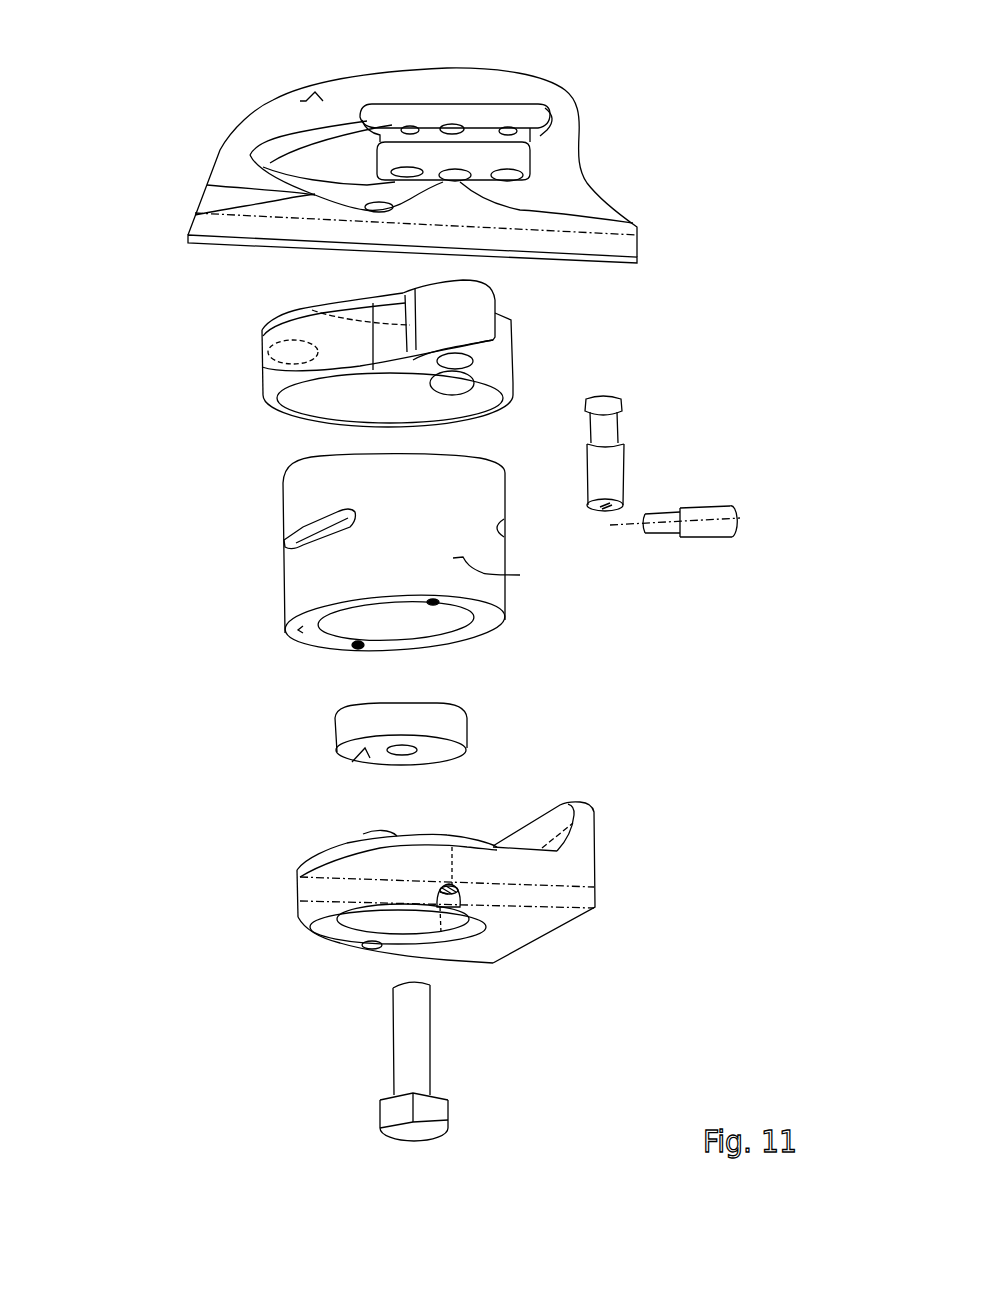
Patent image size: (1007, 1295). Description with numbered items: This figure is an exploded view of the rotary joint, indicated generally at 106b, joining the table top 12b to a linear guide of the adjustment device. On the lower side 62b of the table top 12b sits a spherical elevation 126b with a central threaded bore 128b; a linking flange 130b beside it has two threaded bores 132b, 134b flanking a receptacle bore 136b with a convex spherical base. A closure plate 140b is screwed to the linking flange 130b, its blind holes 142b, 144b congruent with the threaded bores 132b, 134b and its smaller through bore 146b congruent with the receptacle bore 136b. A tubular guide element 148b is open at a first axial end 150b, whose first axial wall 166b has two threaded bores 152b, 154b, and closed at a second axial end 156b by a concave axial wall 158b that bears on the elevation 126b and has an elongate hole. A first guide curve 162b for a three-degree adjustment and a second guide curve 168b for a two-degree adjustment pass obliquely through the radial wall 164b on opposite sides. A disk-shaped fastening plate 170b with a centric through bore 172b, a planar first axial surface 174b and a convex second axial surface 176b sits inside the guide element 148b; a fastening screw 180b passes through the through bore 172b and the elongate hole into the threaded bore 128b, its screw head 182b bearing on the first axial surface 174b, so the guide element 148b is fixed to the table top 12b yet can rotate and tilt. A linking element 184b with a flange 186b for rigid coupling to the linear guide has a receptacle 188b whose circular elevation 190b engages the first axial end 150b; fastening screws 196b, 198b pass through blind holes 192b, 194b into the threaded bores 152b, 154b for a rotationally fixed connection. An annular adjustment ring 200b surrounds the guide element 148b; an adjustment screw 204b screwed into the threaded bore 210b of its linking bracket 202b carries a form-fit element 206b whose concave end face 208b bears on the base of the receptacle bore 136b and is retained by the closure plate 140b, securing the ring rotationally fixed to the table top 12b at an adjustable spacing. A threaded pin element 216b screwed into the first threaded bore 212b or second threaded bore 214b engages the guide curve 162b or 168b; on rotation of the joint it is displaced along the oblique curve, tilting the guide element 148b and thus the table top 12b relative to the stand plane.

The table top 12b is at (250, 132).
The lower side 62b is at (300, 101).
The mounting assembly 106b is at (673, 120).
The elevation 126b is at (343, 158).
The threaded bore 128b is at (285, 196).
The linking flange 130b is at (510, 125).
The threaded bore 132b is at (402, 124).
The threaded bore 134b is at (535, 136).
The receptacle bore 136b is at (448, 120).
The closure plate 140b is at (530, 163).
The blind hole 142b is at (250, 155).
The blind hole 144b is at (482, 175).
The through bore 146b is at (425, 195).
The guide element 148b is at (307, 575).
The first axial end 150b is at (290, 649).
The threaded bore 152b is at (355, 650).
The threaded bore 154b is at (440, 604).
The second axial end 156b is at (274, 466).
The axial wall 158b is at (330, 452).
The first guide curve 162b is at (503, 528).
The radial wall 164b is at (520, 575).
The first axial wall 166b is at (300, 628).
The second guide curve 168b is at (287, 541).
The fastening plate 170b is at (453, 727).
The through bore 172b is at (403, 756).
The first axial surface 174b is at (352, 762).
The second axial surface 176b is at (434, 692).
The fastening screw 180b is at (432, 1104).
The screw head 182b is at (405, 1132).
The linking element 184b is at (325, 883).
The flange 186b is at (612, 874).
The receptacle 188b is at (300, 851).
The circular elevation 190b is at (380, 833).
The blind hole 192b is at (363, 948).
The blind hole 194b is at (448, 908).
The fastening screw 196b is at (368, 958).
The fastening screw 198b is at (442, 933).
The adjustment ring 200b is at (243, 377).
The linking bracket 202b is at (488, 294).
The adjustment screw 204b is at (610, 464).
The form-fit element 206b is at (612, 406).
The concave end face 208b is at (603, 396).
The threaded bore 210b is at (312, 310).
The first threaded bore 212b is at (480, 383).
The second threaded bore 214b is at (260, 355).
The threaded pin element 216b is at (707, 530).